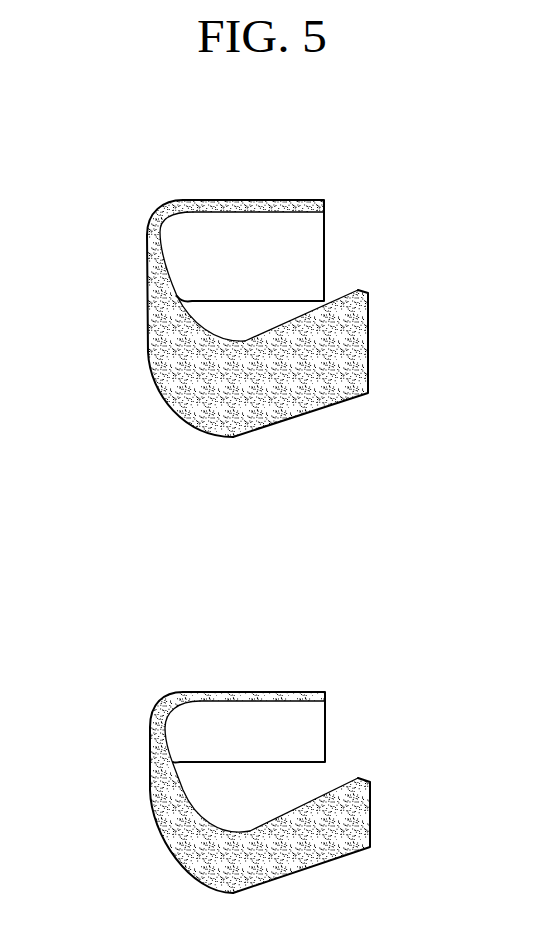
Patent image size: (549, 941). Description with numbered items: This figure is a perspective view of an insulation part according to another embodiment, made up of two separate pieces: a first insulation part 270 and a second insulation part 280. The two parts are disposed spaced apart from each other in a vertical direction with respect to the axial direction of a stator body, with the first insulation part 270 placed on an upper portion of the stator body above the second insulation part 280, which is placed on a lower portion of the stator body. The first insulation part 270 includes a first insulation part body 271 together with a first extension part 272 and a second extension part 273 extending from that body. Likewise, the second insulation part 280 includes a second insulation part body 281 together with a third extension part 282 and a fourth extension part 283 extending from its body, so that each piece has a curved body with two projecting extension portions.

The first insulation part 270 is at (137, 195).
The first insulation part body 271 is at (160, 322).
The first extension part 272 is at (254, 243).
The second extension part 273 is at (352, 353).
The second insulation part 280 is at (138, 691).
The second insulation part body 281 is at (160, 808).
The third extension part 282 is at (254, 730).
The fourth extension part 283 is at (353, 815).